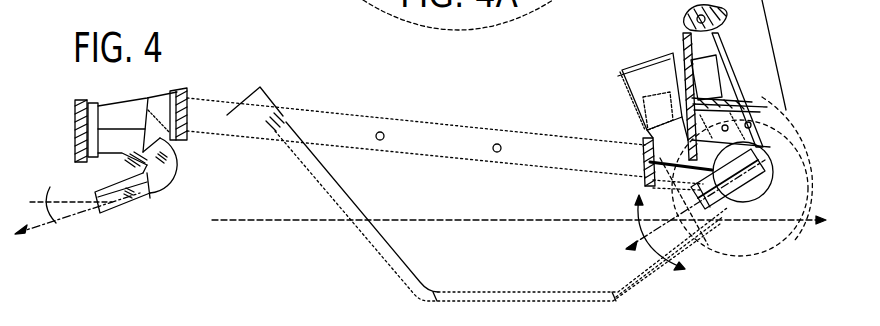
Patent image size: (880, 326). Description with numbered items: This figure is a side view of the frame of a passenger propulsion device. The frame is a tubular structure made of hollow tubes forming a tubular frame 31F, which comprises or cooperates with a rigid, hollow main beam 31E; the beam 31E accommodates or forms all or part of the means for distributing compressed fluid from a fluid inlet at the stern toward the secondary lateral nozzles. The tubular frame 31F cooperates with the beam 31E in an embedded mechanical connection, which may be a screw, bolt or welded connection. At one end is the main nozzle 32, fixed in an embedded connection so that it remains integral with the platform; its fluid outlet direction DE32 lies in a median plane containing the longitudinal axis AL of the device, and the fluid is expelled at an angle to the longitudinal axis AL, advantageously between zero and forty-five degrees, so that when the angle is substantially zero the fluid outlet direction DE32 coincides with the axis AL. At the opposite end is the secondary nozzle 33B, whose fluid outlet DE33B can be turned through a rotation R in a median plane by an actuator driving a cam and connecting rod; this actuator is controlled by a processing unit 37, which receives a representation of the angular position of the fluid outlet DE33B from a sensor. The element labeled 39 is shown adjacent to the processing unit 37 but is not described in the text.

The beam 31E is at (470, 129).
The tubular frame 31F is at (390, 258).
The main nozzle 32 is at (138, 207).
The secondary nozzle 33B is at (726, 196).
The processing unit 37 is at (640, 108).
The bracket plate 39 is at (560, 70).
The longitudinal axis AL is at (519, 210).
The fluid outlet direction DE32 is at (77, 227).
The fluid outlet DE33B is at (660, 213).
The rotation R is at (650, 229).